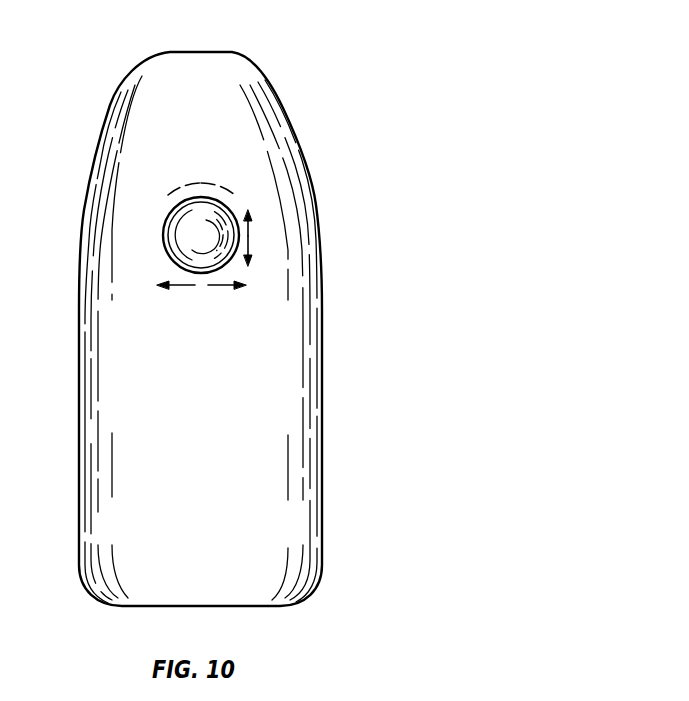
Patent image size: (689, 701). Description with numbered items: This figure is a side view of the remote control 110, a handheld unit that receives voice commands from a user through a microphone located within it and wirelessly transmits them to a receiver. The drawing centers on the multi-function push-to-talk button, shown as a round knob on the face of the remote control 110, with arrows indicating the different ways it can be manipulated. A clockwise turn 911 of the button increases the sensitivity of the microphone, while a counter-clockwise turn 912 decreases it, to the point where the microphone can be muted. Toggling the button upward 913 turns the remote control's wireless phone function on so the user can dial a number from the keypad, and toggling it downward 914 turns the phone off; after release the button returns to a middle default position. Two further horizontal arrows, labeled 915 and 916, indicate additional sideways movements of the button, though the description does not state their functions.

The remote control 110 is at (298, 50).
The clockwise turn 911 is at (238, 199).
The counter-clockwise turn 912 is at (166, 196).
The upward toggle 913 is at (250, 230).
The downward toggle 914 is at (250, 243).
The leftward movement direction arrow 915 is at (166, 290).
The rightward movement direction arrow 916 is at (240, 290).